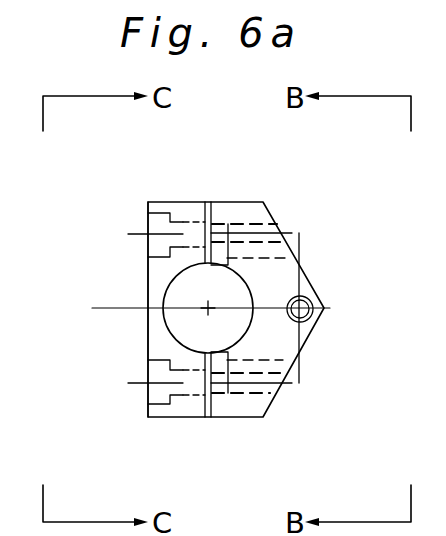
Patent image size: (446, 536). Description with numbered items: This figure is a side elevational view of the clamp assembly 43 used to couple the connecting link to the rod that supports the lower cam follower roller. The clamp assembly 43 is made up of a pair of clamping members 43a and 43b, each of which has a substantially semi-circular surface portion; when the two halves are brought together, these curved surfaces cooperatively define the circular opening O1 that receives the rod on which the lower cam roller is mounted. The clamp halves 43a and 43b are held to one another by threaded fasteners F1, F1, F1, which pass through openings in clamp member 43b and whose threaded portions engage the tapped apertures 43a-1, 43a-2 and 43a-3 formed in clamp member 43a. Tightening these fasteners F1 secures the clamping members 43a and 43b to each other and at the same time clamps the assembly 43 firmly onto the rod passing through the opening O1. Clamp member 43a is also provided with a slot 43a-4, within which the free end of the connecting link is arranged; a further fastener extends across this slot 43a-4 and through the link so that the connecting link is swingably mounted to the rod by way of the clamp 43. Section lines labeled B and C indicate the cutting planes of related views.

The clamp assembly 43 is at (416, 236).
The clamping member 43a is at (263, 165).
The clamping member 43b is at (150, 192).
The tapped aperture 43a-1 is at (252, 222).
The tapped aperture 43a-2 is at (250, 393).
The tapped aperture 43a-3 is at (309, 401).
The slot 43a-4 is at (275, 263).
The threaded fastener F1 is at (148, 218).
The opening O1 is at (168, 298).